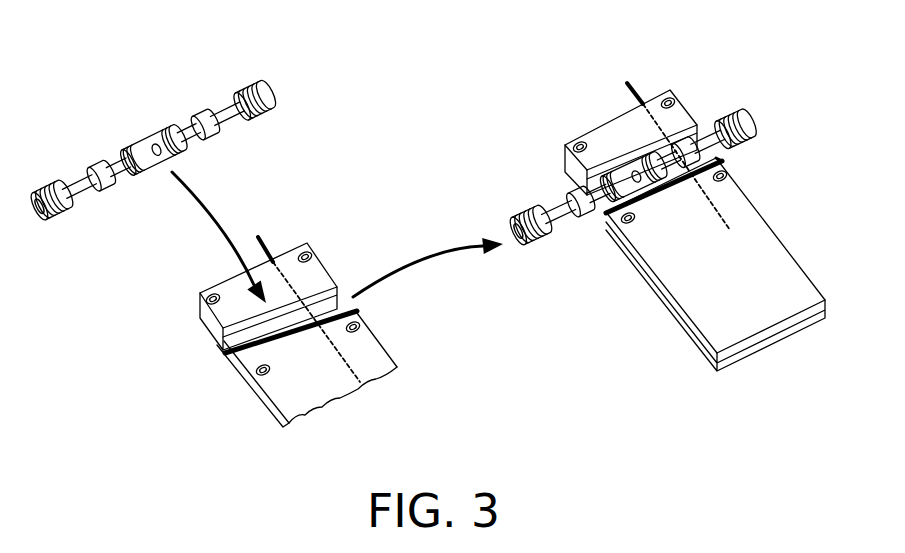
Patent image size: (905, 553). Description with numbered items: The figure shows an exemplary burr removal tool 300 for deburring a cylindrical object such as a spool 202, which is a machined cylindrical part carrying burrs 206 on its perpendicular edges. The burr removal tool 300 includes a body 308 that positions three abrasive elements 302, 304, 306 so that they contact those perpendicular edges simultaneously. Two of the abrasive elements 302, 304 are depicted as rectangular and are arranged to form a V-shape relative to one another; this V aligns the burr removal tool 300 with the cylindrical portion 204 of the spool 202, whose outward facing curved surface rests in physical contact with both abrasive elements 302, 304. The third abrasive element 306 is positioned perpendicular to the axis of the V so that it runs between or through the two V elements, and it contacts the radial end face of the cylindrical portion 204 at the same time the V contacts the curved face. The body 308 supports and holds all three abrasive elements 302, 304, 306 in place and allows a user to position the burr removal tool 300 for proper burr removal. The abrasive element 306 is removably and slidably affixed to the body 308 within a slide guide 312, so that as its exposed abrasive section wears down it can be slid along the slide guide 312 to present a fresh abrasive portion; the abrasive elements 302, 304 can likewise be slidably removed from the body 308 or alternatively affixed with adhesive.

The spool 202 is at (58, 236).
The cylindrical portion 204 is at (726, 162).
The burrs 206 is at (202, 92).
The burr removal tool 300 is at (486, 280).
The abrasive element 302 is at (224, 369).
The abrasive element 304 is at (211, 349).
The abrasive element 306 is at (320, 305).
The body 308 is at (524, 318).
The slide guide 312 is at (775, 287).